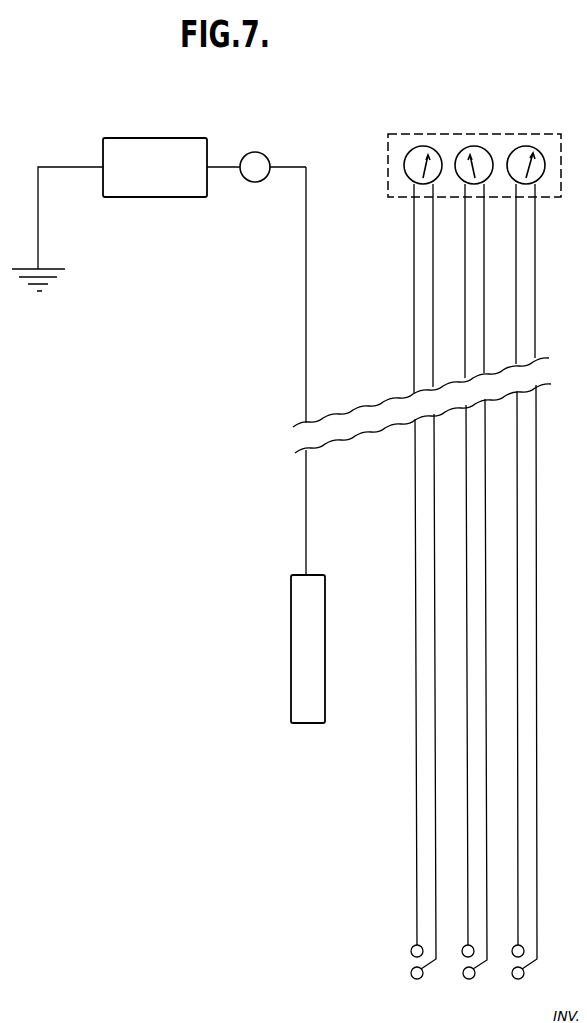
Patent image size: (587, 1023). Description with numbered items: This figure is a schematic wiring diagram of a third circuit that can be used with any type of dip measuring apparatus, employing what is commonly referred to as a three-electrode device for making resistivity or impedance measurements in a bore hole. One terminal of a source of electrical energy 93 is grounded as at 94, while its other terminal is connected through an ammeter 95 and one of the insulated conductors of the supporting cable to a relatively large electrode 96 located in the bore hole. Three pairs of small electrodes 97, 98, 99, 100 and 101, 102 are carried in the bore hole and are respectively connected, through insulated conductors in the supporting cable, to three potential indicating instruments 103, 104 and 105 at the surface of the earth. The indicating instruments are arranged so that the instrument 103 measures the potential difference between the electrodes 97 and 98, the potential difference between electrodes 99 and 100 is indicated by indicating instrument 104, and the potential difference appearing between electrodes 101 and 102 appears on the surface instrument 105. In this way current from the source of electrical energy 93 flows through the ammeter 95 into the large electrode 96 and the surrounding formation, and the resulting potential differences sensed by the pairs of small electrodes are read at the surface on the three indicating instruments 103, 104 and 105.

The source of electrical energy 93 is at (163, 137).
The ground 94 is at (38, 268).
The ammeter 95 is at (265, 156).
The large electrode 96 is at (292, 656).
The small electrode 97 is at (411, 949).
The small electrode 98 is at (411, 974).
The small electrode 99 is at (464, 946).
The small electrode 100 is at (466, 979).
The small electrode 101 is at (515, 946).
The small electrode 102 is at (516, 979).
The potential indicating instrument 103 is at (425, 147).
The potential indicating instrument 104 is at (480, 146).
The potential indicating instrument 105 is at (523, 144).